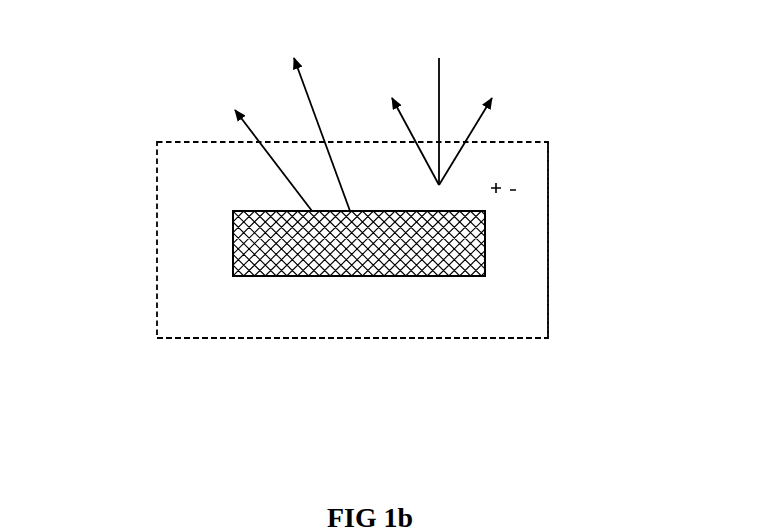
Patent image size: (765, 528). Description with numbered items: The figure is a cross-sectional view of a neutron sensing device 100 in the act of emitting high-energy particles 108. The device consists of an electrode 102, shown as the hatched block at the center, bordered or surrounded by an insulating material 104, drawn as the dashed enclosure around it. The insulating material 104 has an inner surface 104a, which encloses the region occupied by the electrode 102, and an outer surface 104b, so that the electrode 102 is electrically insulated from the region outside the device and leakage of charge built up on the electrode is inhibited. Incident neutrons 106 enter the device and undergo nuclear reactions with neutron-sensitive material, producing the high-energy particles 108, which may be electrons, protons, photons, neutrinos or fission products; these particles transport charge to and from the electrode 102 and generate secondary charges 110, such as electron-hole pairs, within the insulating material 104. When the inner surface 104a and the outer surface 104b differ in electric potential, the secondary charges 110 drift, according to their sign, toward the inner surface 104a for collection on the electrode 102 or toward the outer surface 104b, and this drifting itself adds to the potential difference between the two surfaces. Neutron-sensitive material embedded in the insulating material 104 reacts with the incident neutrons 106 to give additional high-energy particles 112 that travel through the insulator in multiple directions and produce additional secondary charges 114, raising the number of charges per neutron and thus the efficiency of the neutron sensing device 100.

The neutron sensing device 100 is at (590, 108).
The electrode 102 is at (440, 232).
The insulating material 104 is at (203, 298).
The inner surface 104a is at (468, 278).
The outer surface 104b is at (365, 340).
The incident neutrons 106 is at (438, 106).
The high-energy particles 108 is at (278, 69).
The secondary charges 110 is at (312, 175).
The additional high-energy particles 112 is at (444, 123).
The additional secondary charges 114 is at (528, 185).